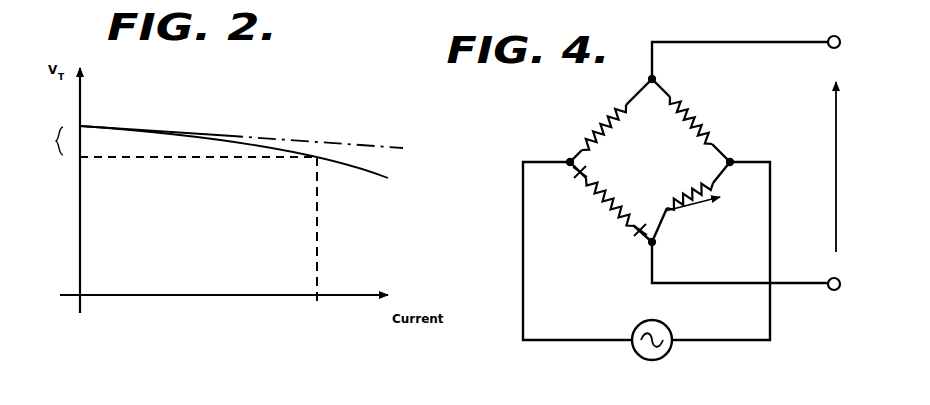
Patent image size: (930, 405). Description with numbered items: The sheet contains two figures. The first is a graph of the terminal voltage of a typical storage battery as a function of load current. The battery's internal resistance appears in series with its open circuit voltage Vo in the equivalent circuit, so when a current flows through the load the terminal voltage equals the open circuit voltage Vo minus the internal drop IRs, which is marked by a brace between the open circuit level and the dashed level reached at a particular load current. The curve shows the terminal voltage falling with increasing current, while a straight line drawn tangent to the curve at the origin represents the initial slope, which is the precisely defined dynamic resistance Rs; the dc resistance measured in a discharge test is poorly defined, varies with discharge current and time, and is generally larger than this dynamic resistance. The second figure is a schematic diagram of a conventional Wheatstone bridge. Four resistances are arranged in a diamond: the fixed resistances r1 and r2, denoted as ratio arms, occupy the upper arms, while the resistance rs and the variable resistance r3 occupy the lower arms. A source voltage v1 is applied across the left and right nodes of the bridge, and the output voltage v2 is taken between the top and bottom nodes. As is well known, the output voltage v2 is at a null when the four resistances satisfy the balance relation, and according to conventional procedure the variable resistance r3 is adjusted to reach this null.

In FIG. 2, the open circuit voltage Vo is at (70, 124).
In FIG. 2, the internal drop IRs is at (34, 141).
In FIG. 2, the dynamic resistance Rs is at (404, 130).
In FIG. 4, the fixed resistance r1 is at (611, 120).
In FIG. 4, the fixed resistance r2 is at (691, 120).
In FIG. 4, the bridge resistance rs is at (611, 202).
In FIG. 4, the variable resistance r3 is at (691, 202).
In FIG. 4, the source voltage v1 is at (650, 350).
In FIG. 4, the output voltage v2 is at (860, 167).